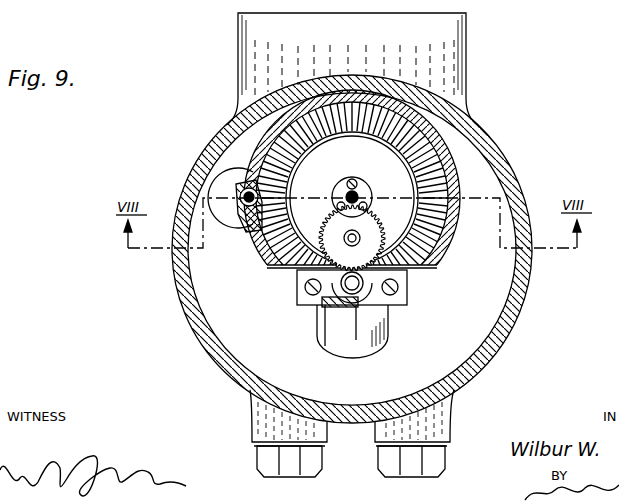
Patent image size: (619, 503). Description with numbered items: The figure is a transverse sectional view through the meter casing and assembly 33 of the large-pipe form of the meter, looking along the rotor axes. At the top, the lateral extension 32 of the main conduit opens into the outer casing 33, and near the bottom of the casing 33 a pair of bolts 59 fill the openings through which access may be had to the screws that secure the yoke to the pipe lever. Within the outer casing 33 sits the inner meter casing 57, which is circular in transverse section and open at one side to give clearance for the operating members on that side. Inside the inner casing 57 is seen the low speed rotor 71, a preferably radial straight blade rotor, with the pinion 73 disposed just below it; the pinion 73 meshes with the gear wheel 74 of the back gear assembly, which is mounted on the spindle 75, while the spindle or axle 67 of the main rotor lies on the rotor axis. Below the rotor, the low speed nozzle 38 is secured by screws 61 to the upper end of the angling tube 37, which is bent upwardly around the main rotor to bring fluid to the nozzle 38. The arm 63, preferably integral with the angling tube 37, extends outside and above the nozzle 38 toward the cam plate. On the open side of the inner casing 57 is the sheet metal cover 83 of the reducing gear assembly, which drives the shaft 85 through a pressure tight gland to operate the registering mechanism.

The lateral extension 32 is at (254, 33).
The meter casing and assembly 33 is at (520, 117).
The shaft 85 is at (246, 193).
The sheet metal cover 83 is at (233, 230).
The low speed rotor 71 is at (452, 185).
The pinion 73 is at (346, 195).
The spindle or axle 67 is at (362, 190).
The gear wheel 74 is at (336, 228).
The spindle 75 is at (359, 236).
The inner meter casing 57 is at (446, 253).
The screws 61 is at (305, 292).
The low speed nozzle 38 is at (370, 306).
The arm 63 is at (336, 327).
The angling tube 37 is at (389, 338).
The bolts 59 is at (386, 470).